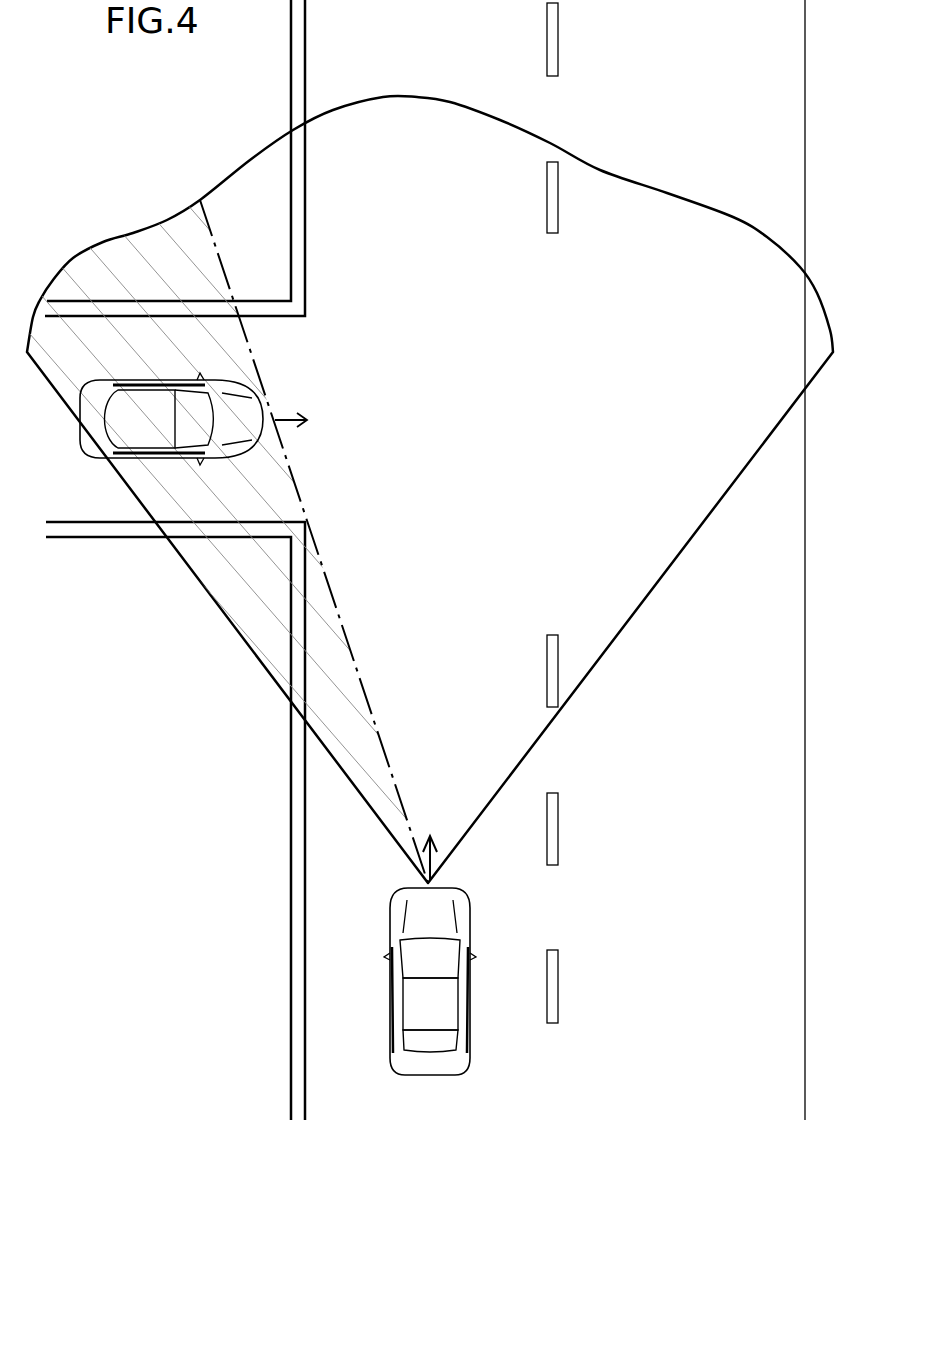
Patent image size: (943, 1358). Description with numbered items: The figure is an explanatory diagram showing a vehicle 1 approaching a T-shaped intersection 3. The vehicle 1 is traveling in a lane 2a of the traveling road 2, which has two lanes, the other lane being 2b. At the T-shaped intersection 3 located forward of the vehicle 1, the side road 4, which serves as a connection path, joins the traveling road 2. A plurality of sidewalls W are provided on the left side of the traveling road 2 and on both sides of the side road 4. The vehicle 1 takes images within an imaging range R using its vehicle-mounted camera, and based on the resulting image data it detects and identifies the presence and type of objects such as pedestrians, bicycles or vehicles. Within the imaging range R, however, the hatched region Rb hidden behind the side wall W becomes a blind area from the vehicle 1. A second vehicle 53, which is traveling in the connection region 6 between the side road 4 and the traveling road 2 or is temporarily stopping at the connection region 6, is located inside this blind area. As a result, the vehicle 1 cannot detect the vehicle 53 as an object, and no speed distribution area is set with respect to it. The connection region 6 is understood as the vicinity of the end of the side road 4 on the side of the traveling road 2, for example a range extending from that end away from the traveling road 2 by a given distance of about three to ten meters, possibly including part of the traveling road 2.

The vehicle 1 is at (392, 1000).
The traveling road 2 is at (555, 612).
The lane 2a is at (424, 1095).
The opposite lane 2b is at (735, 583).
The T-shaped intersection 3 is at (555, 443).
The side road 4 is at (65, 492).
The connection region 6 is at (277, 490).
The second vehicle 53 is at (93, 450).
The sidewall W is at (291, 52).
The imaging range R is at (447, 116).
The hatched region Rb is at (155, 255).